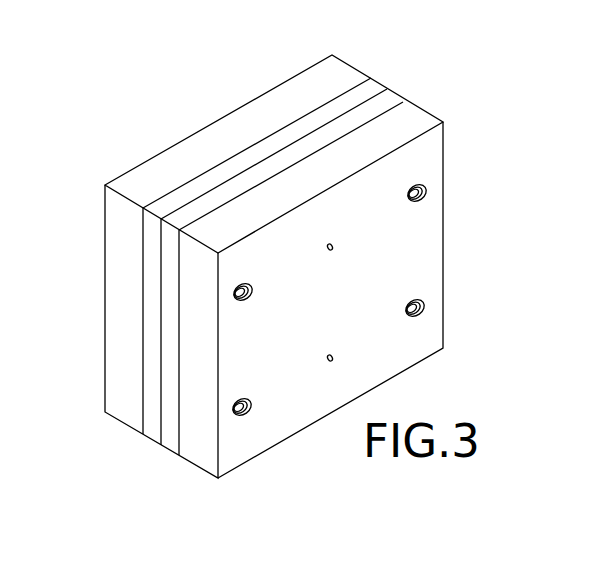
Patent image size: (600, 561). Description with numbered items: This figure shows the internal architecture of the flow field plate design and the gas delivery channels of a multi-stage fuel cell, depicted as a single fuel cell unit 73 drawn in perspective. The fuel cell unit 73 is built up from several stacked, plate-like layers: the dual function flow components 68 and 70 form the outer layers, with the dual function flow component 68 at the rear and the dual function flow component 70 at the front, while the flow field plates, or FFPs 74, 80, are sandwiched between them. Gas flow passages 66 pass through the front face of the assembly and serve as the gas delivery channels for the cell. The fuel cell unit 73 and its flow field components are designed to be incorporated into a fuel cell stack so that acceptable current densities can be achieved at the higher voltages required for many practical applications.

The single fuel cell unit 73 is at (455, 85).
The dual function flow component 68 is at (105, 240).
The FFP 74 is at (142, 313).
The FFP 80 is at (178, 445).
The dual function flow component 70 is at (340, 299).
The gas flow passages 66 is at (254, 289).